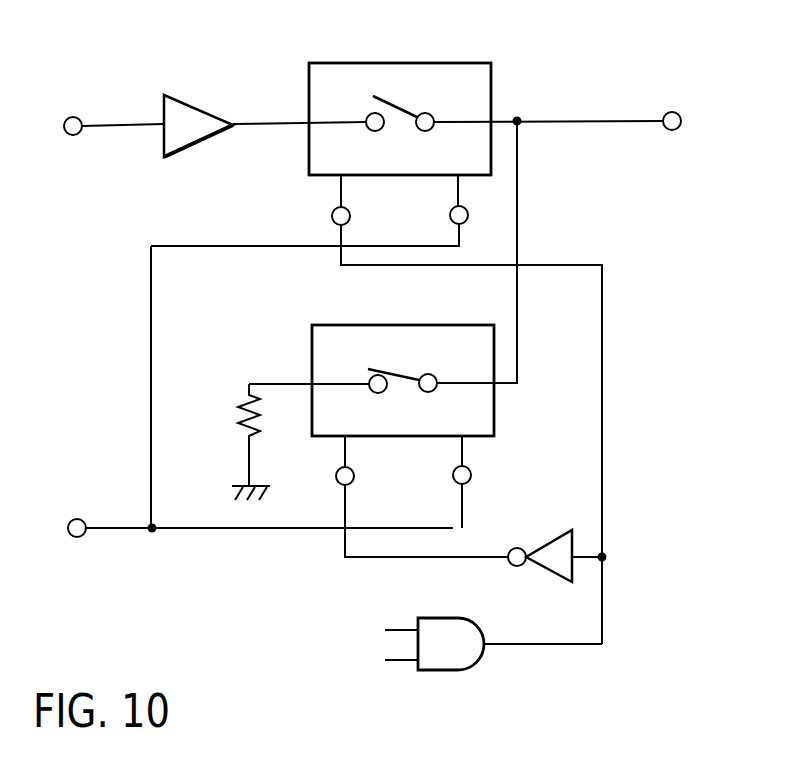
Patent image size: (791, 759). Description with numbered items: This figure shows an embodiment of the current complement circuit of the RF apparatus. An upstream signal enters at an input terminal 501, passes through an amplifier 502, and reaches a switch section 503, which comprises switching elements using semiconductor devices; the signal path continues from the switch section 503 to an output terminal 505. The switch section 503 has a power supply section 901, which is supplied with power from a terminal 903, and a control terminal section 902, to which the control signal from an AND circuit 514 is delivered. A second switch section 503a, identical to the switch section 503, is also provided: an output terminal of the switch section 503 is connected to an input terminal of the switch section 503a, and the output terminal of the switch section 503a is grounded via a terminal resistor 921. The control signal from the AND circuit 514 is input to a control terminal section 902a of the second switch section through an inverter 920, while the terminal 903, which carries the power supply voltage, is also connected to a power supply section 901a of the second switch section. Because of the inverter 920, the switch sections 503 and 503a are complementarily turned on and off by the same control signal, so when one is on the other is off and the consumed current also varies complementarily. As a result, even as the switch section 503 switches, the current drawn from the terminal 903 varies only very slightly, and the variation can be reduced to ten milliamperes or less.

The upstream signal input terminal 501 is at (80, 118).
The amplifier 502 is at (181, 95).
The switch section 503 is at (400, 63).
The output terminal 505 is at (668, 112).
The control terminal section 902 is at (332, 216).
The power supply section 901 is at (450, 215).
The switch section 503a is at (405, 325).
The terminal resistor 921 is at (238, 425).
The control terminal section 902a is at (355, 476).
The power supply section 901a is at (472, 475).
The terminal 903 is at (84, 520).
The inverter 920 is at (540, 570).
The AND circuit 514 is at (445, 617).